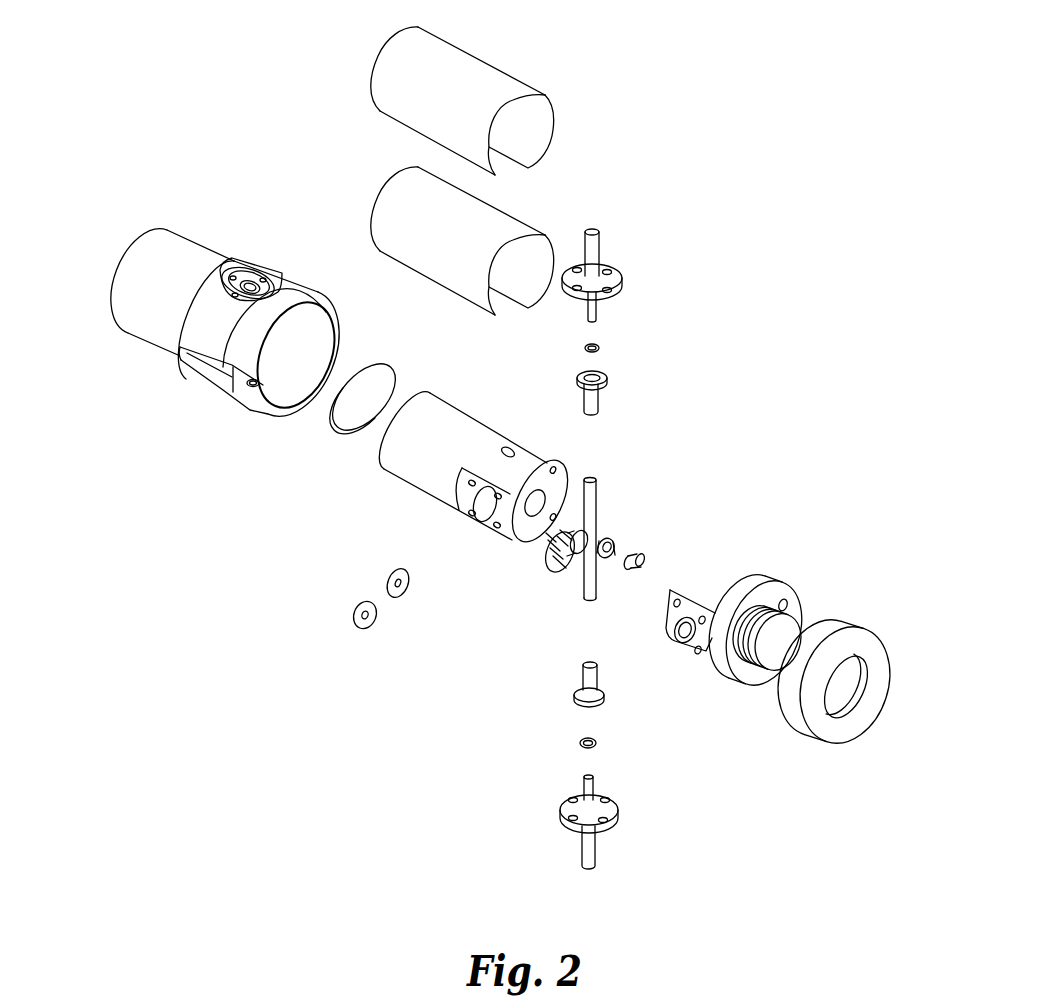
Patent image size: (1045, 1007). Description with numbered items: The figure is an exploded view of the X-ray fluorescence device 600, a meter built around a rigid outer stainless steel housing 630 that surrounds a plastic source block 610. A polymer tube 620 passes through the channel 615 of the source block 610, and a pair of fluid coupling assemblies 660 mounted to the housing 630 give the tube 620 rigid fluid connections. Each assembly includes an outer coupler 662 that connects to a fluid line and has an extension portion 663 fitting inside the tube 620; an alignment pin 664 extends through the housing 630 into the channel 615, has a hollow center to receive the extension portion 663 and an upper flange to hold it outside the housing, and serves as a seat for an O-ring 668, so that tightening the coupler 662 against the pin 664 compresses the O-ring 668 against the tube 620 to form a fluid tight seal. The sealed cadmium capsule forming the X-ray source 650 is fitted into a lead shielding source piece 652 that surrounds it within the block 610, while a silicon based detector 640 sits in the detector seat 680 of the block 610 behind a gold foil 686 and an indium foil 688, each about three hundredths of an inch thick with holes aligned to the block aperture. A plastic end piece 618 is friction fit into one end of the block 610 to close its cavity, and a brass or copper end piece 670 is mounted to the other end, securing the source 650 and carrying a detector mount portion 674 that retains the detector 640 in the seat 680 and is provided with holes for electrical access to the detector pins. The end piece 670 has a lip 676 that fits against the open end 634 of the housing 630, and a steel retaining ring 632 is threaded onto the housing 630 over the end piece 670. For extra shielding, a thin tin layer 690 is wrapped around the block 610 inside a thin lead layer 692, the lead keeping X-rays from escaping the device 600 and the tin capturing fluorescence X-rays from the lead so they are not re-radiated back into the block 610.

The X-ray fluorescence device 600 is at (289, 184).
The source block 610 is at (454, 475).
The channel 615 is at (508, 447).
The plastic end piece 618 is at (377, 381).
The polymer tube 620 is at (596, 488).
The housing 630 is at (197, 247).
The retaining ring 632 is at (858, 622).
The open end 634 is at (338, 322).
The detector 640 is at (573, 568).
The X-ray source 650 is at (642, 557).
The X-ray shielding source piece 652 is at (611, 537).
The fluid coupling assembly 660 is at (688, 310).
The outer coupler 662 is at (598, 245).
The extension portion 663 is at (596, 786).
The alignment pin 664 is at (599, 400).
The O-ring 668 is at (600, 348).
The end piece 670 is at (770, 580).
The detector mount portion 674 is at (688, 652).
The lip 676 is at (753, 595).
The detector seat 680 is at (481, 513).
The gold foil 686 is at (406, 595).
The indium foil 688 is at (362, 624).
The tin layer 690 is at (398, 192).
The lead layer 692 is at (482, 70).